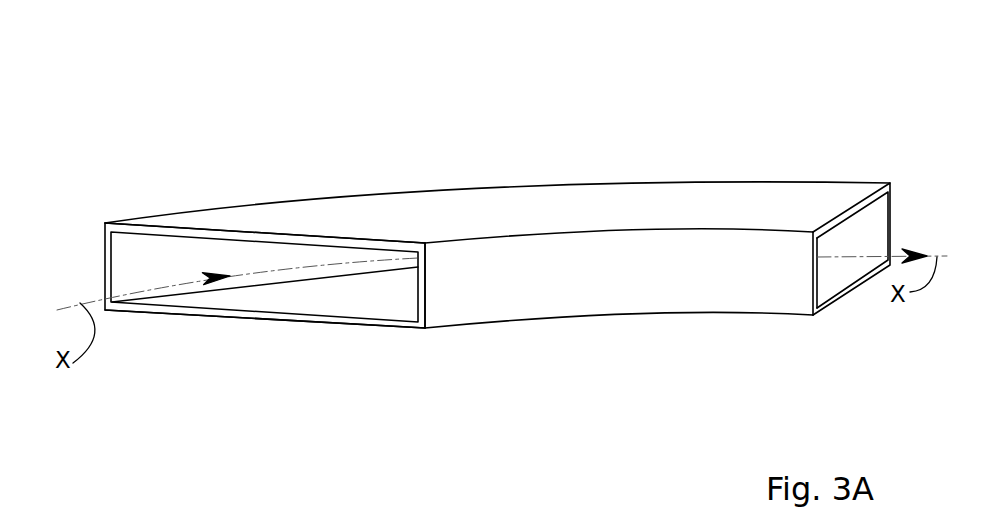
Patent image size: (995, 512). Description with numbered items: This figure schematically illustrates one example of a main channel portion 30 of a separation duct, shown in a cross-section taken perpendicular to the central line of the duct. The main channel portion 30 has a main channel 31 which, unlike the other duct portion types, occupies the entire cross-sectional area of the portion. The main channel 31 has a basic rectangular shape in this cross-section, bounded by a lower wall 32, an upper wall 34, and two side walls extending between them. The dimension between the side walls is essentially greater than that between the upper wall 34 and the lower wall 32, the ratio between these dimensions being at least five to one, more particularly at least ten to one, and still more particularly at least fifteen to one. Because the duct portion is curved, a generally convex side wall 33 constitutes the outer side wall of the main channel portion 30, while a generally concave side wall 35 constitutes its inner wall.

The curved duct 30 is at (501, 193).
The inner passage 31 is at (300, 304).
The bottom wall 32 is at (348, 325).
The inlet end face 33 is at (106, 278).
The top wall 34 is at (273, 220).
The front side wall 35 is at (583, 288).